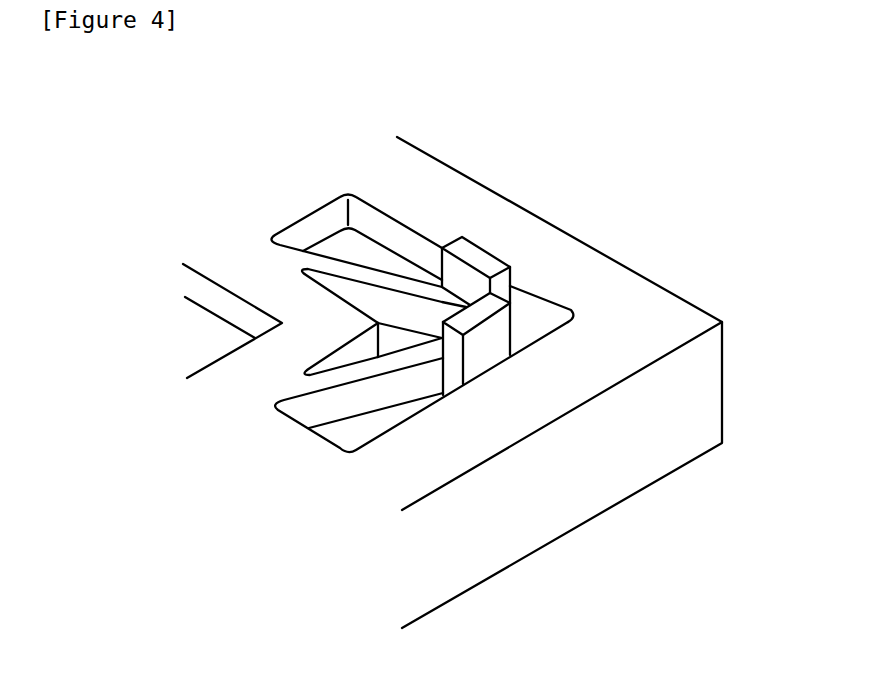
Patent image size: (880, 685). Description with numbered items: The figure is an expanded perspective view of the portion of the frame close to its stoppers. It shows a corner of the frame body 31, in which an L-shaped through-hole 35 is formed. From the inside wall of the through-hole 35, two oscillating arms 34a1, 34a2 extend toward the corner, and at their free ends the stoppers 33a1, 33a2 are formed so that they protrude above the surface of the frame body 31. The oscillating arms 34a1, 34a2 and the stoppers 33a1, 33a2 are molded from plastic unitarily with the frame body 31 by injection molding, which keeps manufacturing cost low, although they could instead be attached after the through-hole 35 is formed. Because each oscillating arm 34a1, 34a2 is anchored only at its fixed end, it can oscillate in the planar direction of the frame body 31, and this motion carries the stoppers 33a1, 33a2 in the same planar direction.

The frame body 31 is at (455, 170).
The stopper 33a1 is at (502, 365).
The stopper 33a2 is at (475, 257).
The oscillating arm 34a1 is at (362, 402).
The oscillating arm 34a2 is at (335, 272).
The L-shaped through-hole 35 is at (538, 317).